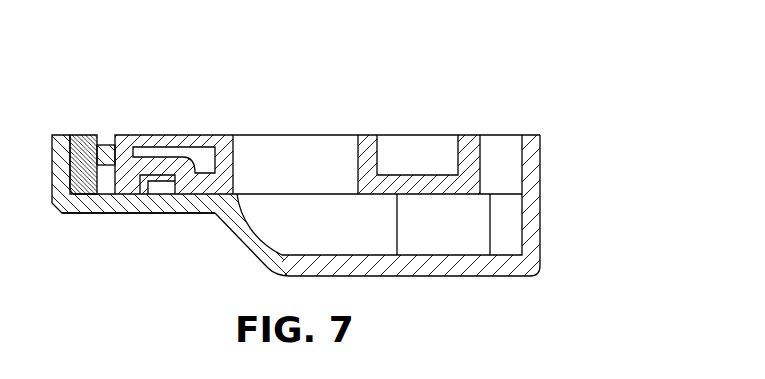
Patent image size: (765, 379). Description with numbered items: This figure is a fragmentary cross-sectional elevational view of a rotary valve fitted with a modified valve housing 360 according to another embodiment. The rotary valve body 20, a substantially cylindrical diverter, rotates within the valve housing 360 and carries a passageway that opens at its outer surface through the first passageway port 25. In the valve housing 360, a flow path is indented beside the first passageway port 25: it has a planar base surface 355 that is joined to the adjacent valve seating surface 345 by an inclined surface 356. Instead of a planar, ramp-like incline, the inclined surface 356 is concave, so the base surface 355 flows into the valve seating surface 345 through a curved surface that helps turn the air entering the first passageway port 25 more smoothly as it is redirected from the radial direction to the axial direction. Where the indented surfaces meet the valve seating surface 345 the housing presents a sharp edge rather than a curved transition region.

The rotary valve body 20 is at (166, 117).
The first passageway port 25 is at (237, 200).
The valve seating surface 345 is at (232, 168).
The planar base surface 355 is at (423, 255).
The inclined surface 356 is at (253, 233).
The valve housing 360 is at (561, 170).